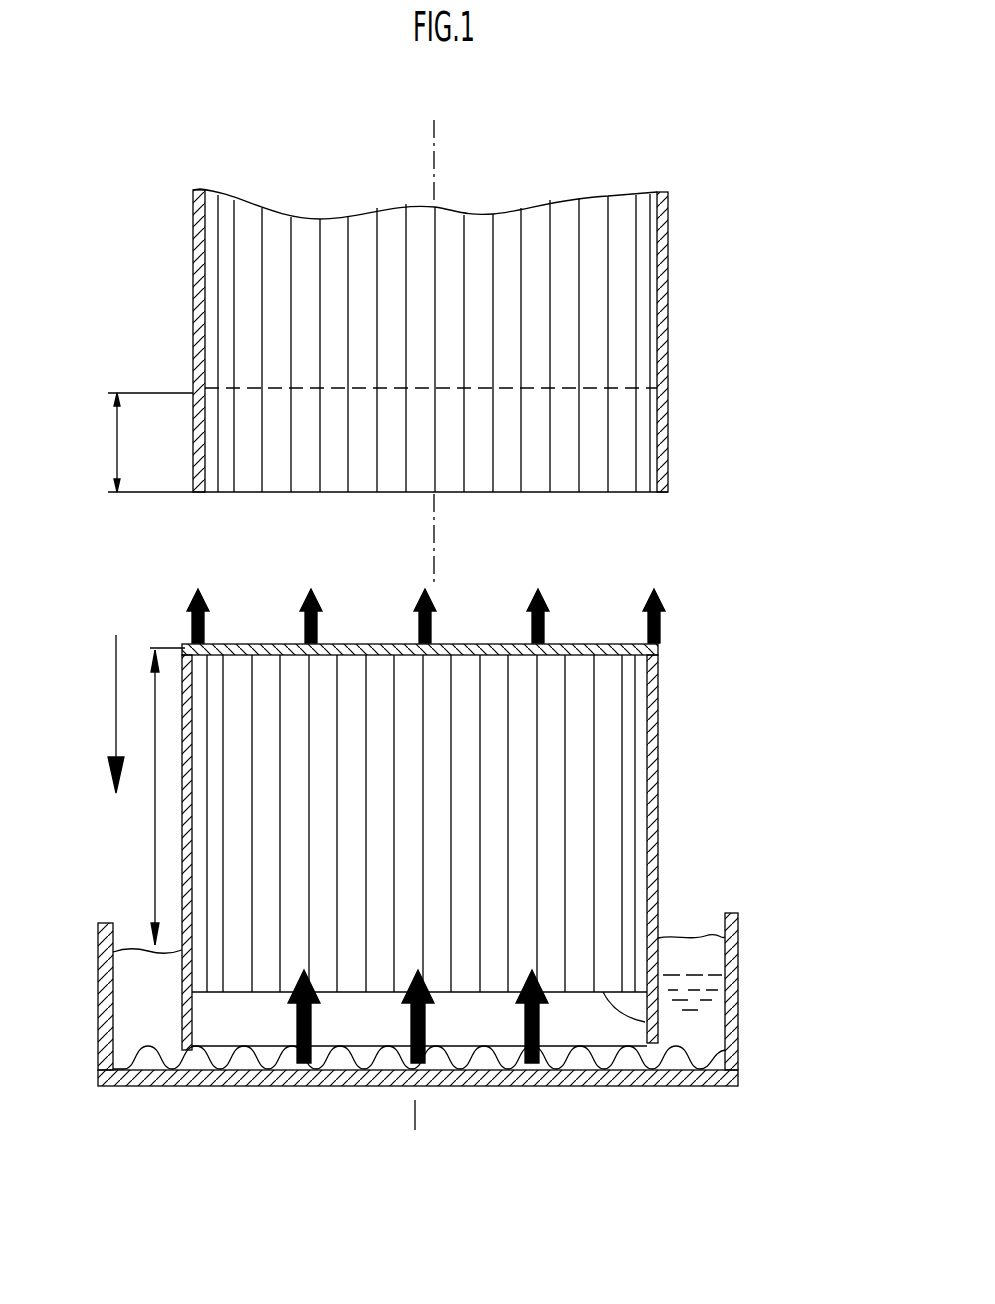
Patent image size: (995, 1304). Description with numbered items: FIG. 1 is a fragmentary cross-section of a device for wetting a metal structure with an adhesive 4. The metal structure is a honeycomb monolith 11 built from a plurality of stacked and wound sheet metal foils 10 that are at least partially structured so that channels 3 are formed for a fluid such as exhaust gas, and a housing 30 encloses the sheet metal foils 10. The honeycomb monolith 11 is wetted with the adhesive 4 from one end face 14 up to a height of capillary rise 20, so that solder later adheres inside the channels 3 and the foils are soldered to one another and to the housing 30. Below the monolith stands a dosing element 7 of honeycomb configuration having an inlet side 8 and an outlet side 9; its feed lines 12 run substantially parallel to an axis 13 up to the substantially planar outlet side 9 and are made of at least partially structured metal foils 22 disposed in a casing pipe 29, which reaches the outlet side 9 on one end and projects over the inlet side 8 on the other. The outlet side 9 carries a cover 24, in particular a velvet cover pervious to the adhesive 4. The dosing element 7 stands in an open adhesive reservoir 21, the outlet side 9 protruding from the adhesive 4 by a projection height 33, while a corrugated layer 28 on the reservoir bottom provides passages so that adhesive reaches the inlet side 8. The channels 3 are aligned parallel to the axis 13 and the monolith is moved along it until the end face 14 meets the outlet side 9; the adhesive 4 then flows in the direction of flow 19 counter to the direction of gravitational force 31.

The channels 3 is at (617, 293).
The adhesive 4 is at (705, 953).
The dosing element 7 is at (683, 706).
The inlet side 8 is at (683, 1011).
The outlet side 9 is at (607, 655).
The sheet metal foils 10 is at (263, 288).
The honeycomb monolith 11 is at (620, 194).
The feed lines 12 is at (603, 739).
The axis 13 is at (436, 148).
The end face 14 is at (620, 492).
The direction of flow 19 is at (540, 1026).
The height of capillary rise 20 is at (117, 446).
The adhesive reservoir 21 is at (648, 1082).
The metal foils 22 is at (620, 833).
The cover 24 is at (235, 645).
The corrugated layer 28 is at (133, 1070).
The casing pipe 29 is at (657, 903).
The housing 30 is at (660, 366).
The direction of gravitational force 31 is at (116, 694).
The projection height 33 is at (153, 810).